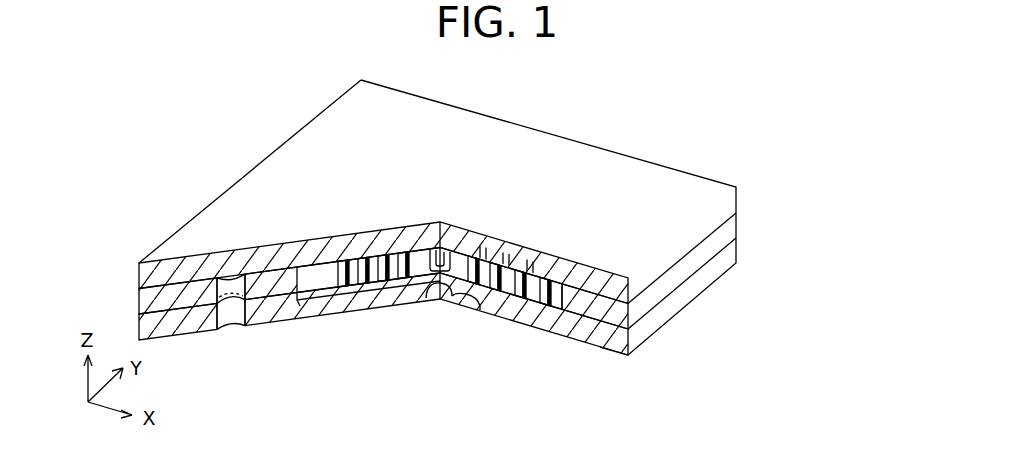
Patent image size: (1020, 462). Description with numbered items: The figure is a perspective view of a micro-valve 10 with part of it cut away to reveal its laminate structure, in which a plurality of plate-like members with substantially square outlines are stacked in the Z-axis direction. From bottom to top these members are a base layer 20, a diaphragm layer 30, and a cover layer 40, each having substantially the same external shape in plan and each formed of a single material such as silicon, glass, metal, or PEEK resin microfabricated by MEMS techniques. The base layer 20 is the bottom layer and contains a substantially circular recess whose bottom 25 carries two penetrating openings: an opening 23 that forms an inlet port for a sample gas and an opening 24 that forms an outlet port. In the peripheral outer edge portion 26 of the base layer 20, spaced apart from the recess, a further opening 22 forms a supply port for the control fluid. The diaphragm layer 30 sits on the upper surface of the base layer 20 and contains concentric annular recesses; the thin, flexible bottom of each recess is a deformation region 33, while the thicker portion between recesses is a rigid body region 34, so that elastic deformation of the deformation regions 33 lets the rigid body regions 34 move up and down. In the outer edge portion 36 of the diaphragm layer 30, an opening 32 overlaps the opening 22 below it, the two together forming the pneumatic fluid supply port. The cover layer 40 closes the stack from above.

The micro-valve 10 is at (672, 113).
The base layer 20 is at (751, 255).
The opening 22 is at (223, 322).
The opening 23 is at (438, 298).
The opening 24 is at (470, 304).
The bottom 25 is at (373, 300).
The peripheral outer edge portion 26 is at (617, 344).
The diaphragm layer 30 is at (751, 230).
The opening 32 is at (215, 299).
The deformation region 33 is at (318, 293).
The rigid body region 34 is at (482, 258).
The outer edge portion 36 is at (587, 312).
The cover layer 40 is at (751, 204).